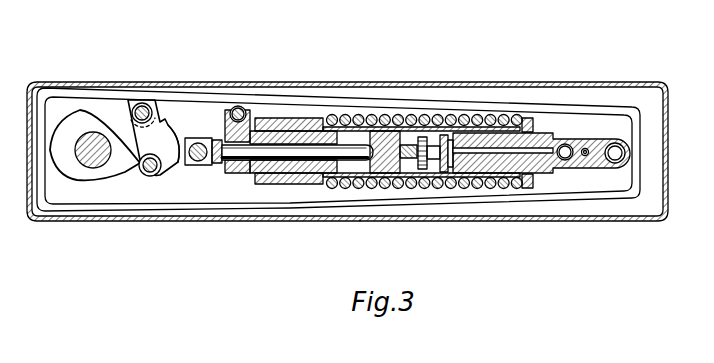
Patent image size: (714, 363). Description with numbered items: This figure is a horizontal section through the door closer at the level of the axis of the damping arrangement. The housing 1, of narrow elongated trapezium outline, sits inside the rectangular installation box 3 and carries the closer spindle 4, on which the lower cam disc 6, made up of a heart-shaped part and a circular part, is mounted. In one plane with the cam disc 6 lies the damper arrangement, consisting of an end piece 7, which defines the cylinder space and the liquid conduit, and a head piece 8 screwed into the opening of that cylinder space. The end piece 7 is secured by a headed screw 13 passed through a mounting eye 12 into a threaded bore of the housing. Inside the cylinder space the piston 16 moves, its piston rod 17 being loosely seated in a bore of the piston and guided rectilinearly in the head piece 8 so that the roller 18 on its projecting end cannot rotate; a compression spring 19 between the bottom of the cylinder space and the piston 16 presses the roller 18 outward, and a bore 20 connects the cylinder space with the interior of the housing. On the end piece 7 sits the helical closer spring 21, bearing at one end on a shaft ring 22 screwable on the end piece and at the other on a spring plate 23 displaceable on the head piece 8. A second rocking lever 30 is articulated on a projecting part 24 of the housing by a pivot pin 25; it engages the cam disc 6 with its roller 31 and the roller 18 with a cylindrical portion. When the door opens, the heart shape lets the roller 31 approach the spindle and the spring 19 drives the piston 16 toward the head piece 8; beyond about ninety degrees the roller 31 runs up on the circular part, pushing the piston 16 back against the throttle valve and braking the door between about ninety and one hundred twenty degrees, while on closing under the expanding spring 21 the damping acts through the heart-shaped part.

The housing 1 is at (332, 203).
The installation box 3 is at (373, 219).
The closer spindle 4 is at (243, 105).
The cam disc 6 is at (67, 130).
The end piece 7 is at (544, 171).
The head piece 8 is at (230, 176).
The mounting eye 12 is at (592, 173).
The headed screw 13 is at (621, 142).
The piston 16 is at (402, 174).
The piston rod 17 is at (293, 162).
The roller 18 is at (195, 168).
The compression spring 19 is at (437, 172).
The bore 20 is at (255, 175).
The helical closer spring 21 is at (404, 118).
The shaft ring 22 is at (530, 119).
The spring plate 23 is at (299, 117).
The projecting part 24 is at (133, 108).
The pivot pin 25 is at (147, 106).
The second rocking lever 30 is at (174, 121).
The roller 31 is at (147, 176).